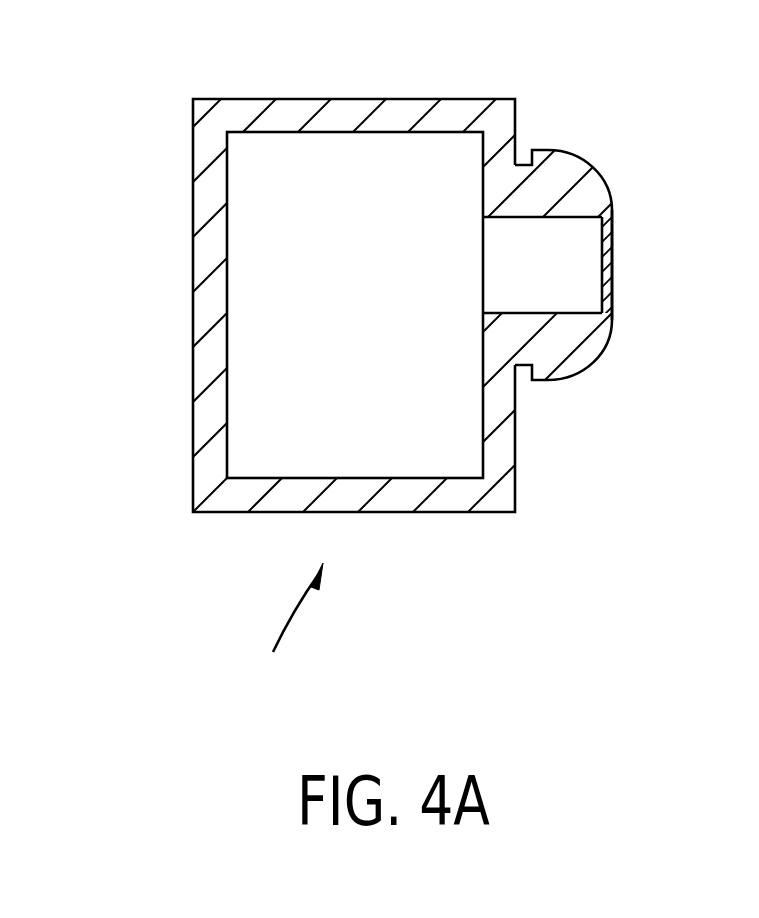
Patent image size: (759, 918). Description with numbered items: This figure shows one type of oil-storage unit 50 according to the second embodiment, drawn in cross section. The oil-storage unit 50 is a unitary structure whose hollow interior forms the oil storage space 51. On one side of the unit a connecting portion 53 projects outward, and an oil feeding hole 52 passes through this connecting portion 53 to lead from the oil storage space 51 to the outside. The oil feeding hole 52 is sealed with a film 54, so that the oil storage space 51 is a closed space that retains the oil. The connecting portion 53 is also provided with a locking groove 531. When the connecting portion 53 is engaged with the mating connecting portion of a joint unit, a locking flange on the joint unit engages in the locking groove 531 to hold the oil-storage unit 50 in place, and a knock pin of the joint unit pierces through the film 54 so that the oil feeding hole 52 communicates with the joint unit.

The oil-storage unit 50 is at (517, 437).
The oil storage space 51 is at (275, 377).
The oil feeding hole 52 is at (503, 265).
The connecting portion 53 is at (582, 192).
The locking groove 531 is at (524, 148).
The film 54 is at (610, 264).